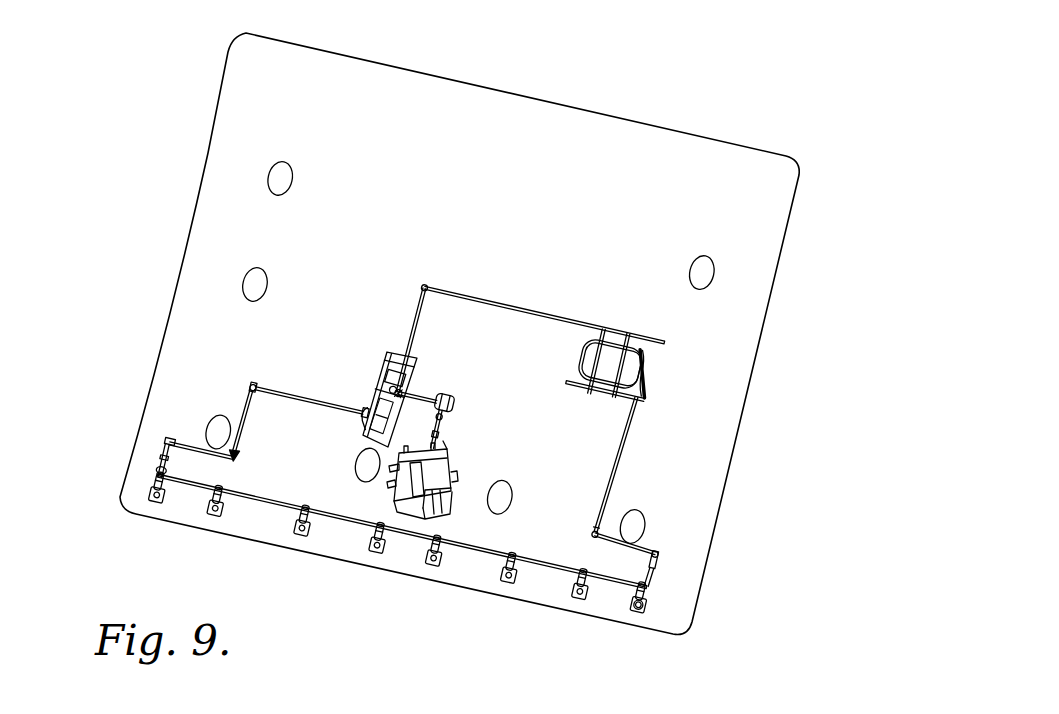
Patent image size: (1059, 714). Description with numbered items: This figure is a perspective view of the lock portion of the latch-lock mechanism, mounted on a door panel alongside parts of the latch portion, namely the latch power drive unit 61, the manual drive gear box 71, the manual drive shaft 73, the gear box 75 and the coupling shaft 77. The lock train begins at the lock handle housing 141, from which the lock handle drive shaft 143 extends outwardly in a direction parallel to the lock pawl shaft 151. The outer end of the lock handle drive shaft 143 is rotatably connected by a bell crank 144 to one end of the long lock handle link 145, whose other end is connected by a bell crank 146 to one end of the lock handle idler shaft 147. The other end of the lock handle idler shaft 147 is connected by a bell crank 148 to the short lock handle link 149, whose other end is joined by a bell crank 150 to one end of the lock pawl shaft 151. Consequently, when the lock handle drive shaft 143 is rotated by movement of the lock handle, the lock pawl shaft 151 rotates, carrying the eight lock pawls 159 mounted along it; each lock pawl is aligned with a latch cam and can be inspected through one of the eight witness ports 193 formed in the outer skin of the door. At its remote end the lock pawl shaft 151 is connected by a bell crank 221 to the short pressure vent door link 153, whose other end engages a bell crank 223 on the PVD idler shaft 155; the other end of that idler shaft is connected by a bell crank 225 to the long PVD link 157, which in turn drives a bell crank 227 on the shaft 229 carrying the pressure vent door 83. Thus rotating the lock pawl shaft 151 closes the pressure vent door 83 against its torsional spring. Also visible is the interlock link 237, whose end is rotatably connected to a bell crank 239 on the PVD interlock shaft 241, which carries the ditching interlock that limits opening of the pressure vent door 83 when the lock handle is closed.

The latch power drive unit 61 is at (435, 457).
The manual drive 90° gear box 71 is at (392, 352).
The manual drive shaft 73 is at (402, 388).
The 90° gear box 75 is at (443, 399).
The coupling shaft 77 is at (440, 426).
The pressure vent door 83 is at (640, 372).
The lock handle housing 141 is at (364, 380).
The lock handle drive shaft 143 is at (300, 398).
The bell crank 144 is at (290, 350).
The long lock handle link 145 is at (238, 418).
The bell crank 146 is at (230, 453).
The lock handle idler shaft 147 is at (186, 440).
The bell crank 148 is at (168, 441).
The short lock handle link 149 is at (165, 467).
The bell crank 150 is at (162, 477).
The lock pawl shaft 151 is at (490, 544).
The short pressure vent door link 153 is at (650, 576).
The PVD idler shaft 155 is at (650, 550).
The long PVD link 157 is at (625, 435).
The lock pawls 159 is at (156, 496).
The witness ports 193 is at (155, 500).
The bell crank 221 is at (655, 608).
The bell crank 223 is at (655, 562).
The bell crank 225 is at (602, 526).
The bell crank 227 is at (640, 394).
The shaft 229 is at (602, 398).
The link 237 is at (415, 324).
The bell crank 239 is at (427, 286).
The PVD interlock shaft 241 is at (547, 256).